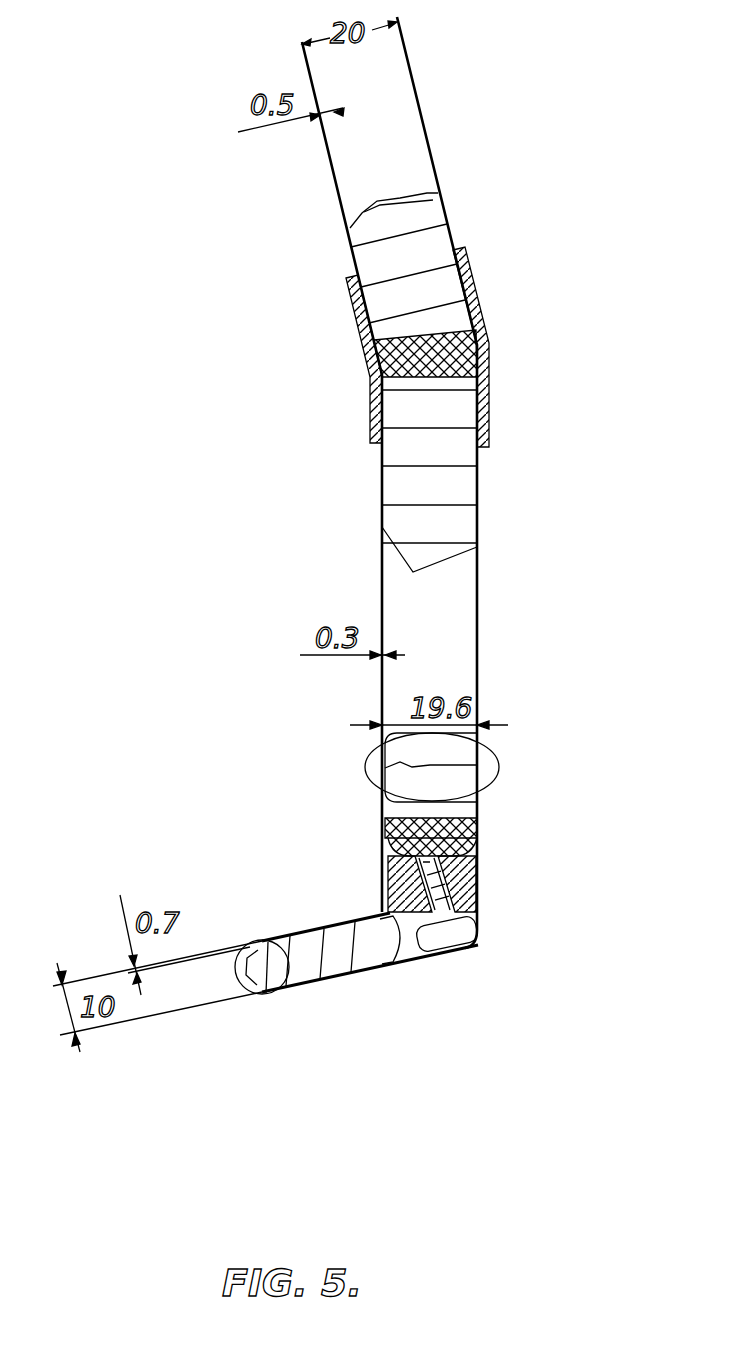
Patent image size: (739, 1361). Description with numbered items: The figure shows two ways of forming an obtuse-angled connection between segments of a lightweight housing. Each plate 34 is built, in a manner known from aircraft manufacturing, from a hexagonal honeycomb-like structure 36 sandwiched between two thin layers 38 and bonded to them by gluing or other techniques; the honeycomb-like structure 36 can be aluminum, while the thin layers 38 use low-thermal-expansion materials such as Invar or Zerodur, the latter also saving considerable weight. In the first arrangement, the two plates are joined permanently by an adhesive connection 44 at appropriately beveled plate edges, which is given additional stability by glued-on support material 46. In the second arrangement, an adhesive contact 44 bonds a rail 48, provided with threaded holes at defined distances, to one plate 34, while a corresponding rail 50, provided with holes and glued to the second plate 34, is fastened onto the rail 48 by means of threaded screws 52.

The plate 34 is at (500, 773).
The honeycomb-like structure 36 is at (450, 497).
The thin layer 38 is at (382, 517).
The adhesive connection 44 is at (477, 338).
The support material 46 is at (470, 283).
The rail 48 is at (478, 877).
The corresponding rail 50 is at (413, 952).
The threaded screw 52 is at (460, 935).